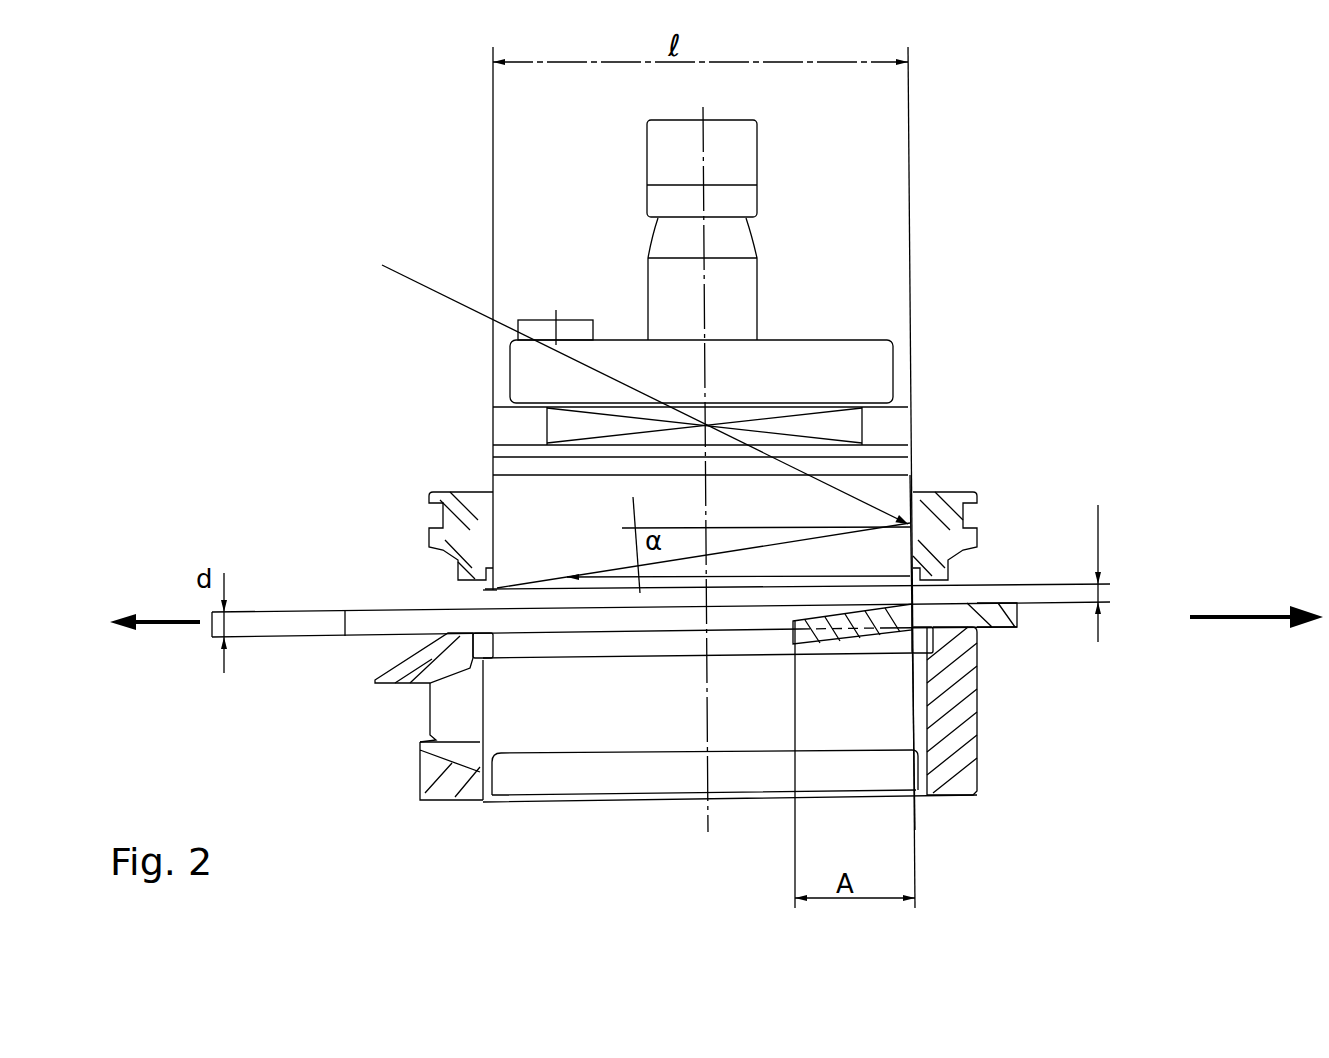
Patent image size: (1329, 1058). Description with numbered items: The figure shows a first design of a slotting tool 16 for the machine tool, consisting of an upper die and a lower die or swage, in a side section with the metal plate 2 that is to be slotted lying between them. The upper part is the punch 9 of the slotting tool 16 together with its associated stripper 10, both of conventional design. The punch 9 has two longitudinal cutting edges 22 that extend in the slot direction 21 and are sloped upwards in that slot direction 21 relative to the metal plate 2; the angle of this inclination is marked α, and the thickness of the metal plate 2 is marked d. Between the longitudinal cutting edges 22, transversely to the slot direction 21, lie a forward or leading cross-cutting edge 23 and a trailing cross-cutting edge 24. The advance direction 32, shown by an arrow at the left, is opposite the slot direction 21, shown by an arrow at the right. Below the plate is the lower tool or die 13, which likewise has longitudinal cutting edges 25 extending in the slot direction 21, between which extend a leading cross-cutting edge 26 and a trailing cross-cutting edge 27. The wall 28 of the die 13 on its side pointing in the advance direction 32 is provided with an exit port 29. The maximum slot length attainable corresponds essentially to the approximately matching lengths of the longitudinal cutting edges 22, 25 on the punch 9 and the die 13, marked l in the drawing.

The metal plate 2 is at (385, 613).
The punch 9 is at (903, 372).
The stripper 10 is at (950, 490).
The die 13 is at (988, 723).
The slotting tool 16 is at (992, 548).
The slot direction 21 is at (1240, 613).
The longitudinal cutting edges 22 is at (620, 567).
The leading cross-cutting edge 23 is at (624, 381).
The trailing cross-cutting edge 24 is at (432, 551).
The longitudinal cutting edges 25 is at (652, 632).
The leading cross-cutting edge 26 is at (933, 630).
The trailing cross-cutting edge 27 is at (442, 635).
The wall 28 is at (415, 777).
The exit port 29 is at (450, 716).
The advance direction 32 is at (163, 622).